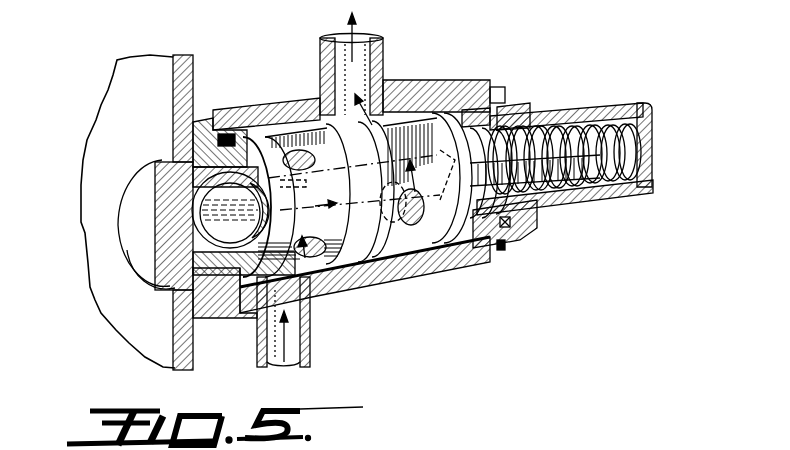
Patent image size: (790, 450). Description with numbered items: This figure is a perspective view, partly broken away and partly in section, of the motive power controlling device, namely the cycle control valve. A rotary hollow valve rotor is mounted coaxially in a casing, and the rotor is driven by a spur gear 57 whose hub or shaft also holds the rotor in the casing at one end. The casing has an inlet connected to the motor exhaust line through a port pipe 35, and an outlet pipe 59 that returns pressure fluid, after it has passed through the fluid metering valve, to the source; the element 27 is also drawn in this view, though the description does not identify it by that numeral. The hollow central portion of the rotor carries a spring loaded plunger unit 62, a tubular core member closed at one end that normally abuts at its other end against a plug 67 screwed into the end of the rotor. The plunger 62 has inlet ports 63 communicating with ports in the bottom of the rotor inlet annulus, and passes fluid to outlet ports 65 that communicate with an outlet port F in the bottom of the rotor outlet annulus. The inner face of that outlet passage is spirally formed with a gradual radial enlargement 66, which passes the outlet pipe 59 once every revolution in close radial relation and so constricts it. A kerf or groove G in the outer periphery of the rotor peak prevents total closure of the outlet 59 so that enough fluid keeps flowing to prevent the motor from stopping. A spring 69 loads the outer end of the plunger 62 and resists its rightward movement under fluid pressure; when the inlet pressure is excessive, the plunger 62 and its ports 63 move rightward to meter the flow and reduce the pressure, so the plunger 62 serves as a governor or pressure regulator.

The spur gear 57 is at (104, 107).
The plug 67 is at (131, 249).
The valve housing 27 is at (415, 78).
The inlet ports 63 is at (230, 323).
The outlet pipe 59 is at (384, 44).
The port pipe 35 is at (310, 332).
The outlet ports 65 is at (392, 262).
The gradual radial enlargement 66 is at (377, 260).
The outlet port F is at (427, 247).
The kerf or groove G is at (407, 247).
The spring loaded plunger unit 62 is at (516, 233).
The spring 69 is at (637, 118).